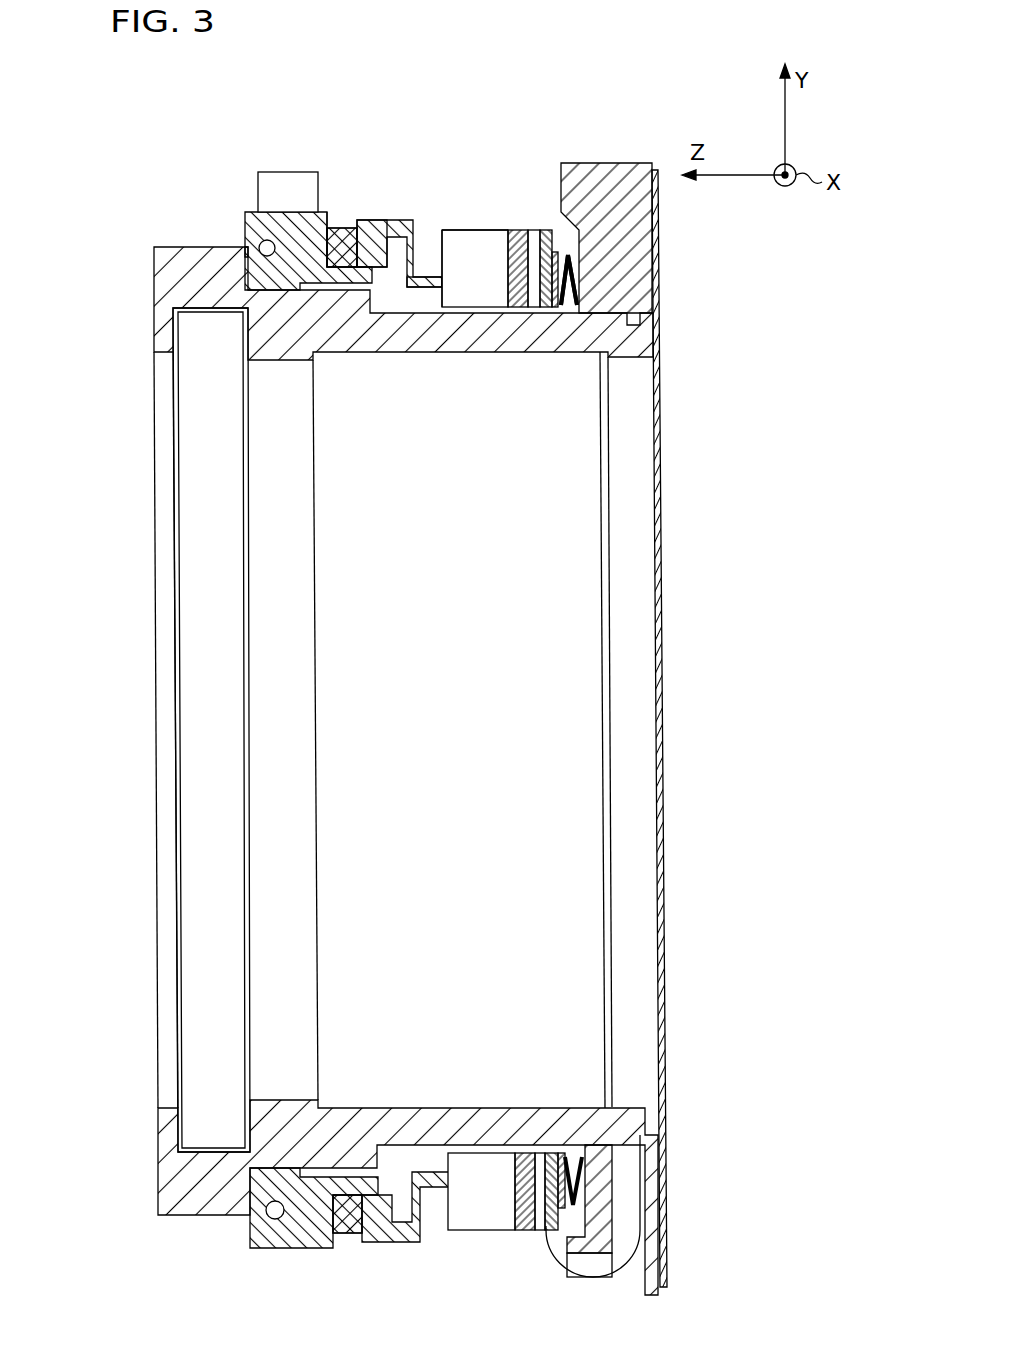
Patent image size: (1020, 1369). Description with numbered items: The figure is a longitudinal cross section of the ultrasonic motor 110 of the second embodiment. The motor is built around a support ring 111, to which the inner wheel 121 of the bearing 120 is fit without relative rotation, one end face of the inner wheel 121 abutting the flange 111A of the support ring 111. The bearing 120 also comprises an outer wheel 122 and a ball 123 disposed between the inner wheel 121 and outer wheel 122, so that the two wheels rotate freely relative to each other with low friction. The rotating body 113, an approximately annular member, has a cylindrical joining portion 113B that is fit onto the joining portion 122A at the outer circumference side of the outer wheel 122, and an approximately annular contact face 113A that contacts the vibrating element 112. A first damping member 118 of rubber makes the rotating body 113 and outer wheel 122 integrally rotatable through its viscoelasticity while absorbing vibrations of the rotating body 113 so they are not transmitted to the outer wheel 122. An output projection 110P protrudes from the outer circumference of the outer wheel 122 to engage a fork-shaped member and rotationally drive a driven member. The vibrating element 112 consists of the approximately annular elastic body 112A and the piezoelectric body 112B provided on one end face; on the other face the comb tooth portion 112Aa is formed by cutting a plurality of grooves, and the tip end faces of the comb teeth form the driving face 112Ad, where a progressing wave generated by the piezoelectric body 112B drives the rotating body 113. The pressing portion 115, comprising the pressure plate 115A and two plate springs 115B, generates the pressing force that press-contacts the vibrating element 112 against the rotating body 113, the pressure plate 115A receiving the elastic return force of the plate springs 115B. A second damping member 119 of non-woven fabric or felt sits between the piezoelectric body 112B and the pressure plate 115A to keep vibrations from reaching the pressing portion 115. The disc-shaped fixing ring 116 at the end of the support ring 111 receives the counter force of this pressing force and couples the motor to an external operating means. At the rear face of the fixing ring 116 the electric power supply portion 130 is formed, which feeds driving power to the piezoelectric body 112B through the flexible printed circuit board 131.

The ultrasonic motor 110 is at (340, 719).
The support ring 111 is at (353, 736).
The flange 111A is at (172, 245).
The output projection 110P is at (282, 172).
The vibrating element 112 is at (509, 630).
The elastic body 112A is at (486, 651).
The driving face 112Ad is at (444, 232).
The comb tooth portion 112Aa is at (485, 240).
The piezoelectric body 112B is at (535, 230).
The rotating body 113 is at (401, 663).
The contact face 113A is at (450, 278).
The joining portion 113B is at (387, 220).
The pressing portion 115 is at (671, 730).
The pressure plate 115A is at (570, 307).
The plate springs 115B is at (553, 307).
The fixing ring 116 is at (630, 163).
The first damping member 118 is at (340, 228).
The second damping member 119 is at (550, 250).
The bearing 120 is at (266, 659).
The inner wheel 121 is at (236, 258).
The outer wheel 122 is at (288, 659).
The joining portion 122A is at (310, 212).
The ball 123 is at (257, 248).
The electric power supply portion 130 is at (660, 230).
The flexible printed circuit board 131 is at (622, 1278).